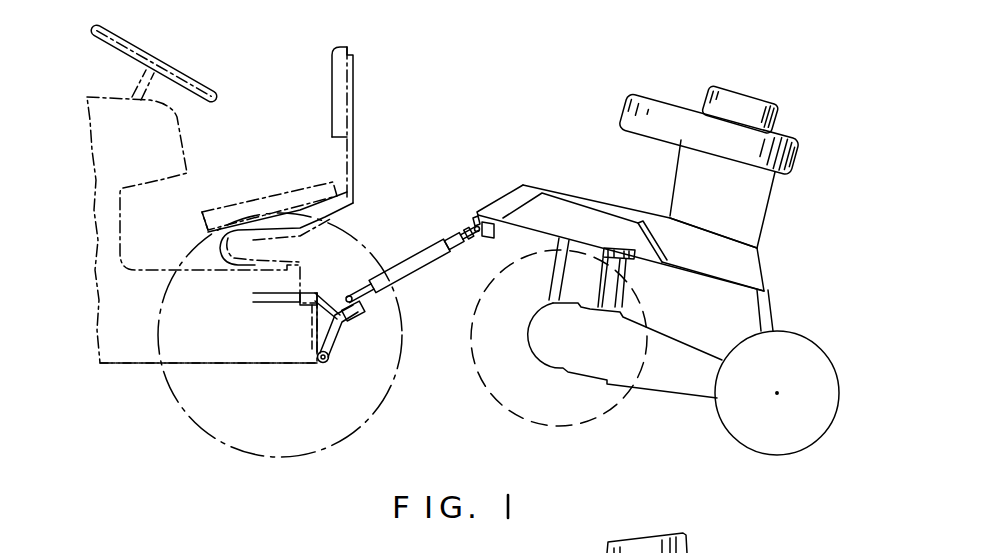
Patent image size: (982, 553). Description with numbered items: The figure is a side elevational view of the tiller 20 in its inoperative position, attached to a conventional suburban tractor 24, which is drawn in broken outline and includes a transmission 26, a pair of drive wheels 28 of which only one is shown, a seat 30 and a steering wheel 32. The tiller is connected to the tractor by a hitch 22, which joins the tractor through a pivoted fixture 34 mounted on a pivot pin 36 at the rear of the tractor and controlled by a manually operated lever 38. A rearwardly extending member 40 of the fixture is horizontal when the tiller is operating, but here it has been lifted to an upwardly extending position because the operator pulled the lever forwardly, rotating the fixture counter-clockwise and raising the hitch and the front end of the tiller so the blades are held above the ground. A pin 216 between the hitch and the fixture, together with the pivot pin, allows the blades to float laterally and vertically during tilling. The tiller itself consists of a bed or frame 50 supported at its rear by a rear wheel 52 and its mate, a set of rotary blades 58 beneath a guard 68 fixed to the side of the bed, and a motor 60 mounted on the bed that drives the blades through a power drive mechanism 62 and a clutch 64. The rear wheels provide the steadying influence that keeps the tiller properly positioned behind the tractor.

The tiller 20 is at (590, 165).
The hitch 22 is at (439, 252).
The suburban tractor 24 is at (240, 137).
The transmission 26 is at (172, 350).
The drive wheels 28 is at (360, 413).
The seat 30 is at (354, 163).
The steering wheel 32 is at (170, 63).
The pivoted fixture 34 is at (334, 334).
The pivot pin 36 is at (326, 363).
The manually operated lever 38 is at (285, 300).
The rearwardly extending member 40 is at (357, 313).
The pin 216 is at (352, 297).
The bed 50 is at (752, 262).
The rear wheel 52 is at (796, 345).
The rotary blades 58 is at (506, 393).
The motor 60 is at (729, 198).
The power drive mechanism 62 is at (629, 281).
The clutch 64 is at (541, 346).
The guard 68 is at (652, 245).